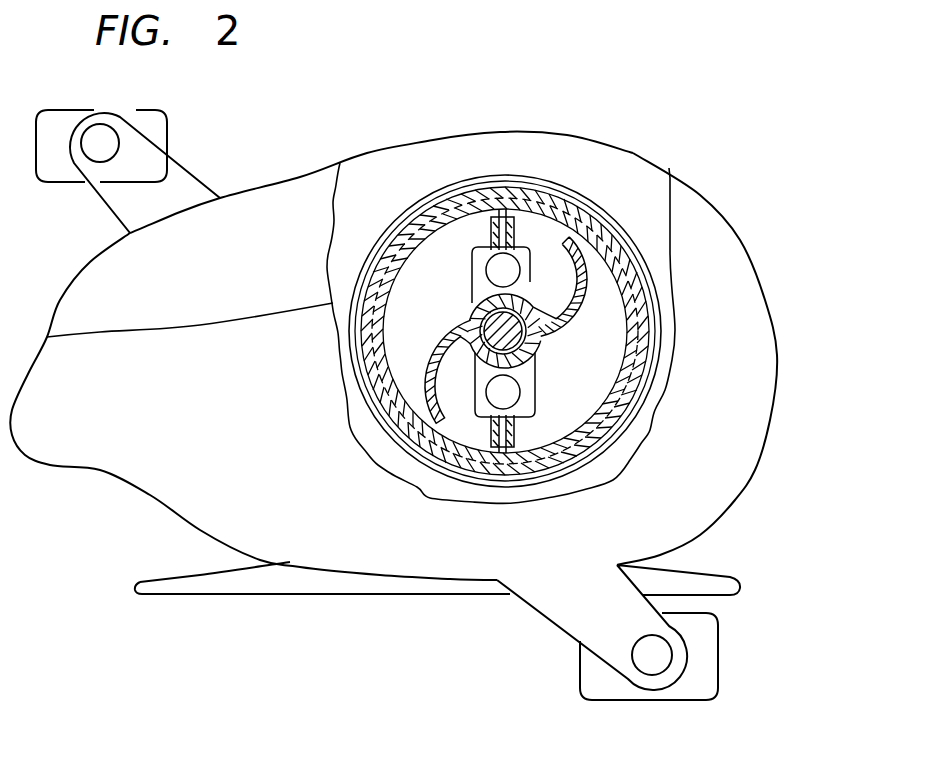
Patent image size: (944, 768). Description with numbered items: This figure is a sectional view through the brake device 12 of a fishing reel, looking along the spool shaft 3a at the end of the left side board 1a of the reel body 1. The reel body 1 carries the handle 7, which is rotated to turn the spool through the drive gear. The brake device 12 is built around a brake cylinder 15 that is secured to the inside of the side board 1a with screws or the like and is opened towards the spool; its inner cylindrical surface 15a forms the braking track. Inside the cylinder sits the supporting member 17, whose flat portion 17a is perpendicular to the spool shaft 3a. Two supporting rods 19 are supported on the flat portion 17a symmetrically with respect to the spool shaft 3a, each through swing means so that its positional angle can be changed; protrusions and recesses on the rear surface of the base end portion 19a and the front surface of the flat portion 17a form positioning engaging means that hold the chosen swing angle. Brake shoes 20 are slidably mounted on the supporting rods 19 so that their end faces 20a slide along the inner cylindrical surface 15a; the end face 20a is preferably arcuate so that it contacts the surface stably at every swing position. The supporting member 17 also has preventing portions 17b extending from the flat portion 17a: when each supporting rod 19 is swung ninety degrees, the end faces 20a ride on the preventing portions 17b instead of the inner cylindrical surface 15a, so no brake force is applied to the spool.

The reel body 1 is at (125, 500).
The side board 1a is at (735, 500).
The handle 7 is at (177, 177).
The brake device 12 is at (362, 198).
The brake cylinder 15 is at (572, 228).
The inner cylindrical surface 15a is at (398, 331).
The supporting member 17 is at (473, 263).
The flat portion 17a is at (590, 264).
The preventing portions 17b is at (580, 304).
The supporting rods 19 is at (516, 235).
The base end portion 19a is at (488, 275).
The brake shoes 20 is at (526, 222).
The end face 20a is at (482, 210).
The spool shaft 3a is at (505, 345).